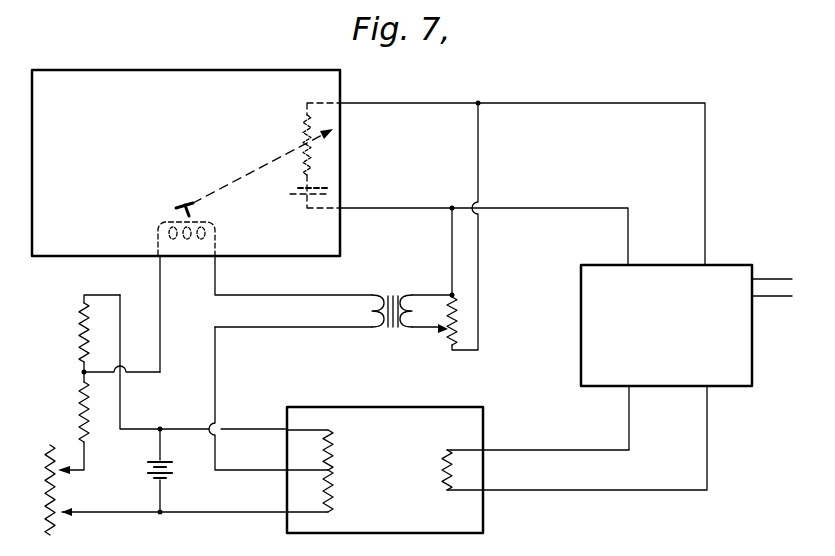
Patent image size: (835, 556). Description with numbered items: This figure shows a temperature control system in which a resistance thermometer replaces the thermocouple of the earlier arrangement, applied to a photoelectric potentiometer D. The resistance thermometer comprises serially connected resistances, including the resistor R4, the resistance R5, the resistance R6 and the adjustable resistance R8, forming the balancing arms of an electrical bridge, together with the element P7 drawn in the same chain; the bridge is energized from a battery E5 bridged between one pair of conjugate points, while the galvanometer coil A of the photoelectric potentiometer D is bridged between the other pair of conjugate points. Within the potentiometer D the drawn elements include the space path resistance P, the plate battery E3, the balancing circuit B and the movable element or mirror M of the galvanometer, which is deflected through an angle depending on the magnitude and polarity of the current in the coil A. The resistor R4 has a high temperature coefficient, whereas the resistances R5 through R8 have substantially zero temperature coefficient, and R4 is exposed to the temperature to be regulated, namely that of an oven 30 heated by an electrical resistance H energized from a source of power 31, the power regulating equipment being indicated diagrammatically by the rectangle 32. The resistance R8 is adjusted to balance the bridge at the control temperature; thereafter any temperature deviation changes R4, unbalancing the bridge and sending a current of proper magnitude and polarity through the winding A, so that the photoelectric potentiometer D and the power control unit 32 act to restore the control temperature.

The photoelectric potentiometer D is at (162, 72).
The space path resistance P is at (303, 122).
The movable element or mirror M is at (178, 206).
The plate battery E3 is at (288, 186).
The galvanometer coil A is at (187, 240).
The resistance R6 is at (78, 333).
The potentiometer P7 is at (77, 412).
The adjustable resistance R8 is at (60, 508).
The battery E5 is at (170, 472).
The balancing circuit B is at (207, 353).
The resistance R5 is at (312, 450).
The resistor with high temperature coefficient R4 is at (312, 491).
The oven 30 is at (399, 525).
The electrical resistance heater H is at (466, 458).
The power control unit 32 is at (590, 341).
The source of power 31 is at (773, 292).